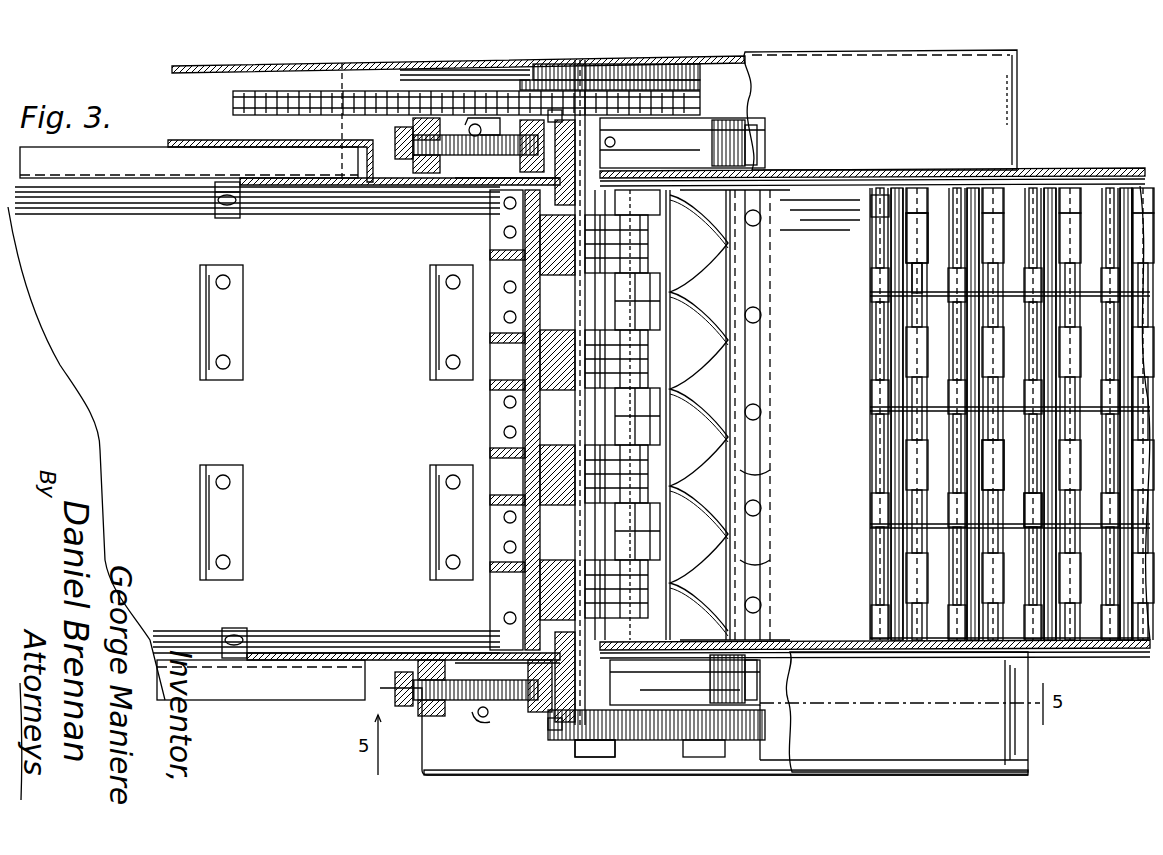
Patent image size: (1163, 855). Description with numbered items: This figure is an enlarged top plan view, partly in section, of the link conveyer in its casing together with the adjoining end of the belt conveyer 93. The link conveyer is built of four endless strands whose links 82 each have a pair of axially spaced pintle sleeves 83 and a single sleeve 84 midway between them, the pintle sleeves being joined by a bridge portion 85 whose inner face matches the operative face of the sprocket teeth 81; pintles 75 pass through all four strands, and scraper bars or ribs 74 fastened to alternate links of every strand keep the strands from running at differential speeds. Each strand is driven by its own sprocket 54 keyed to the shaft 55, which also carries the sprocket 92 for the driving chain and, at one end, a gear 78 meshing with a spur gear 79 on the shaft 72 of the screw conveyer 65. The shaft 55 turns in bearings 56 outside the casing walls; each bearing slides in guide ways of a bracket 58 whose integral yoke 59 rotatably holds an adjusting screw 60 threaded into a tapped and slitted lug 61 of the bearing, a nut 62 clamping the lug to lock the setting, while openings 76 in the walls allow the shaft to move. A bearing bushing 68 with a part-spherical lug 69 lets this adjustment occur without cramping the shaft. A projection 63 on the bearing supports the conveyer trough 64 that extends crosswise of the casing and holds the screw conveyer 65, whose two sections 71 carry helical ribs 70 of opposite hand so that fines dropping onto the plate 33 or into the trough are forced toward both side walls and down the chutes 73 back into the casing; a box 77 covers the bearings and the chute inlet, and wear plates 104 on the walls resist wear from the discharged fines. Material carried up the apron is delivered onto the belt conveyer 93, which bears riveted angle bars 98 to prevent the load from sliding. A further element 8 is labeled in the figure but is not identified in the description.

The slat bar 8 is at (1025, 462).
The plate 33 is at (840, 200).
The sprocket 54 is at (492, 252).
The shaft 55 is at (575, 396).
The bearing 56 is at (528, 190).
The bracket 58 is at (665, 88).
The yoke 59 is at (428, 125).
The adjusting screw 60 is at (432, 118).
The lug 61 is at (525, 120).
The nut 62 is at (474, 124).
The projection 63 is at (760, 140).
The conveyer trough 64 is at (722, 340).
The screw conveyer 65 is at (765, 482).
The bearing bushing 68 is at (568, 118).
The lug 69 is at (553, 108).
The helically projecting ribs 70 is at (768, 564).
The sections 71 is at (770, 295).
The shaft 72 is at (730, 118).
The chute 73 is at (748, 125).
The scraper bar 74 is at (560, 372).
The pintle 75 is at (870, 581).
The opening 76 is at (460, 182).
The box 77 is at (775, 770).
The gear 78 is at (620, 745).
The spur gear 79 is at (765, 740).
The teeth 81 is at (760, 222).
The link 82 is at (985, 455).
The pintle sleeves 83 is at (878, 215).
The single sleeve 84 is at (910, 240).
The bridge portion 85 is at (915, 272).
The sprocket 92 is at (628, 88).
The belt conveyer 93 is at (78, 372).
The angle bars 98 is at (432, 345).
The wear plates 104 is at (765, 190).